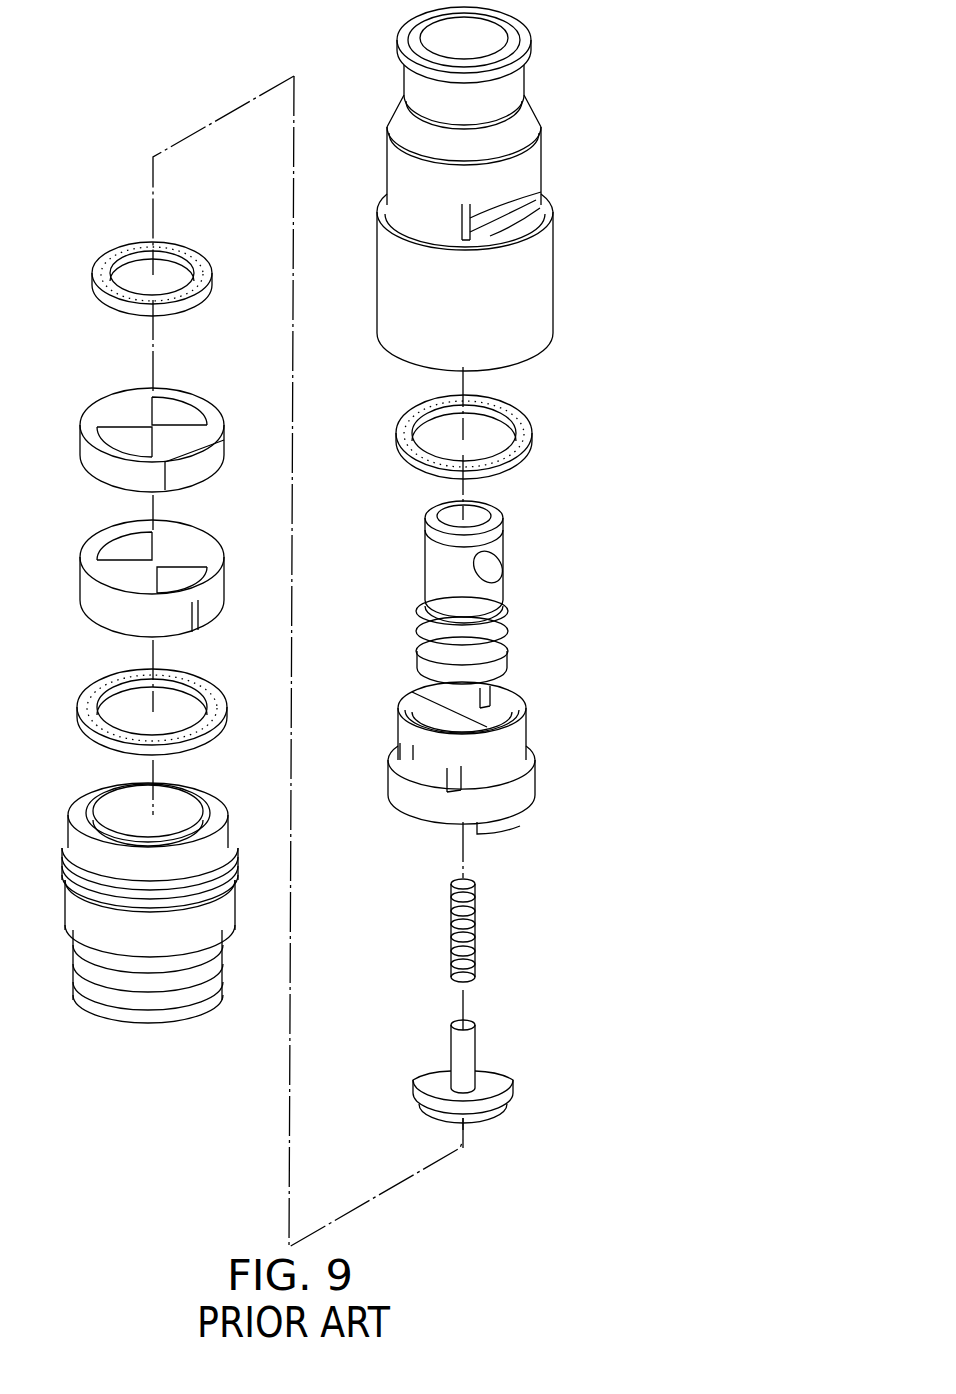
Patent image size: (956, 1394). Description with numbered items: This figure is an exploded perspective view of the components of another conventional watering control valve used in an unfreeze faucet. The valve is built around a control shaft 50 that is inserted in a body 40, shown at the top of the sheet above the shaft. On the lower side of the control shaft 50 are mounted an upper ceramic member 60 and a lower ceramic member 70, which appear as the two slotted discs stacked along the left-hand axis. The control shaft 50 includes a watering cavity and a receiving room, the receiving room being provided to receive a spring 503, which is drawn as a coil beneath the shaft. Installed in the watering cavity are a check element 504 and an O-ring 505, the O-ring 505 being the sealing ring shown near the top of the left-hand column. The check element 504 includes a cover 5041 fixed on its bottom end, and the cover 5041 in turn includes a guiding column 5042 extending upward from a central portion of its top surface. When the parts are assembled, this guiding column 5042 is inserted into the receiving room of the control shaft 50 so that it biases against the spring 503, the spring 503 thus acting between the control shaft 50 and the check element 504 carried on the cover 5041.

The body 40 is at (552, 248).
The control shaft 50 is at (526, 731).
The upper ceramic member 60 is at (208, 393).
The lower ceramic member 70 is at (90, 550).
The spring 503 is at (474, 937).
The check element 504 is at (520, 1041).
The cover 5041 is at (490, 1094).
The guiding column 5042 is at (462, 1046).
The O-ring 505 is at (200, 253).